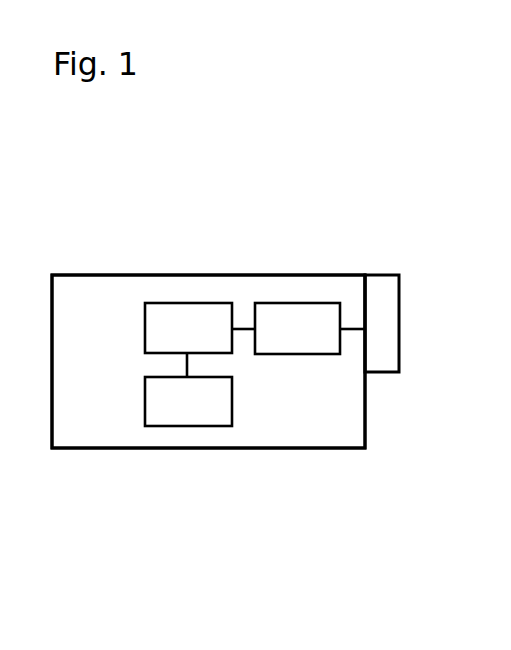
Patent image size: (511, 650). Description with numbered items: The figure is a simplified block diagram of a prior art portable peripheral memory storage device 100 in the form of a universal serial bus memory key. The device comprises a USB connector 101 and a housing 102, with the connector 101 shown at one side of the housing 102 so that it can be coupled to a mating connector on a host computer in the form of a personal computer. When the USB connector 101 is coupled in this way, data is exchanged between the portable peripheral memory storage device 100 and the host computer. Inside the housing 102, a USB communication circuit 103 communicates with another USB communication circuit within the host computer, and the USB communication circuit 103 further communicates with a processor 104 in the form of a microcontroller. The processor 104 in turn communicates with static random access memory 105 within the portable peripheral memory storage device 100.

The portable peripheral memory storage device 100 is at (336, 243).
The USB connector 101 is at (388, 352).
The housing 102 is at (277, 275).
The USB communication circuit 103 is at (297, 342).
The processor 104 is at (187, 318).
The static random access memory 105 is at (191, 413).